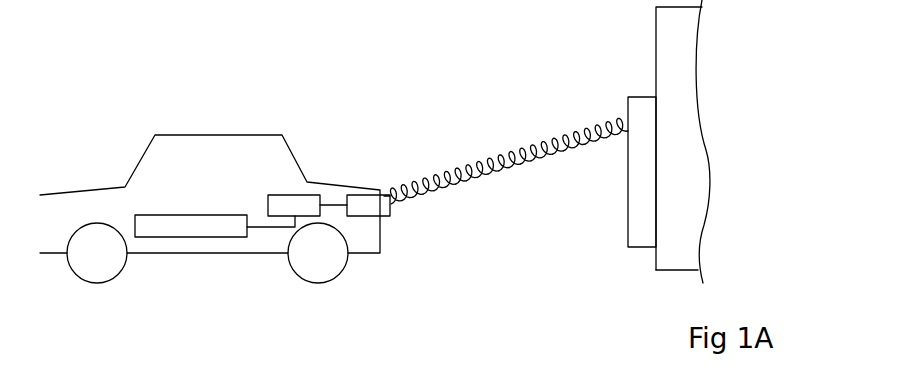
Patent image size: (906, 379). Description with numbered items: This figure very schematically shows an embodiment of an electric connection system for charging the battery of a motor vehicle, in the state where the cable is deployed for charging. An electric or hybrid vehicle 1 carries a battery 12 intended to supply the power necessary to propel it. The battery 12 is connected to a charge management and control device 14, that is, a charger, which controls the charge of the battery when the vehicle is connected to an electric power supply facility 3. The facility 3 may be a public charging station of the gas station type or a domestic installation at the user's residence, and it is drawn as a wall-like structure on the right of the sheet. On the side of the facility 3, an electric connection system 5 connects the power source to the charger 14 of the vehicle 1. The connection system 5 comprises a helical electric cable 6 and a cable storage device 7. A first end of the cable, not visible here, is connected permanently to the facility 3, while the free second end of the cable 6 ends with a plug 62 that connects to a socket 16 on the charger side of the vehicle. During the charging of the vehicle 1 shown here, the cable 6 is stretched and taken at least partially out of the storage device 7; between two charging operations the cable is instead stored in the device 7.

The electric or hybrid vehicle 1 is at (275, 157).
The battery 12 is at (188, 226).
The charge management and control device 14 is at (307, 203).
The socket 16 is at (363, 205).
The plug 62 is at (384, 194).
The helical electric cable 6 is at (528, 138).
The electric connection system 5 is at (630, 84).
The electric power supply facility 3 is at (682, 78).
The cable storage device 7 is at (641, 225).